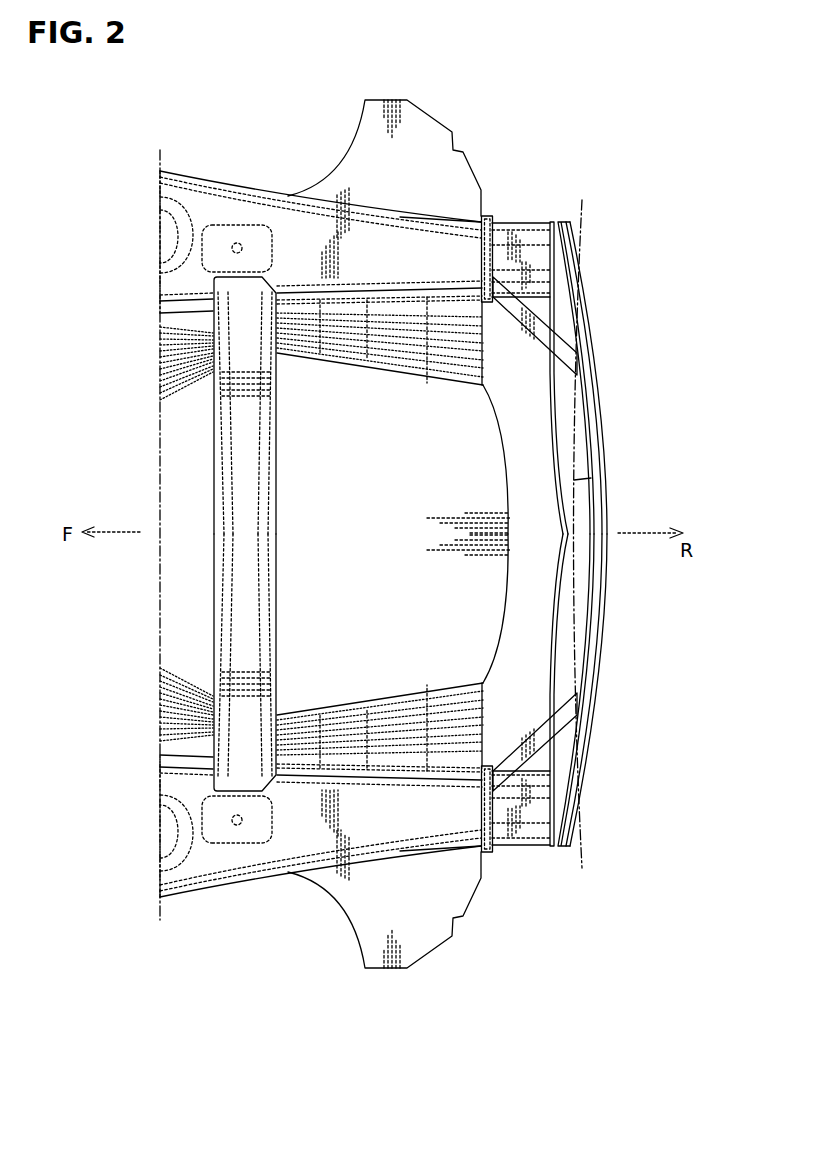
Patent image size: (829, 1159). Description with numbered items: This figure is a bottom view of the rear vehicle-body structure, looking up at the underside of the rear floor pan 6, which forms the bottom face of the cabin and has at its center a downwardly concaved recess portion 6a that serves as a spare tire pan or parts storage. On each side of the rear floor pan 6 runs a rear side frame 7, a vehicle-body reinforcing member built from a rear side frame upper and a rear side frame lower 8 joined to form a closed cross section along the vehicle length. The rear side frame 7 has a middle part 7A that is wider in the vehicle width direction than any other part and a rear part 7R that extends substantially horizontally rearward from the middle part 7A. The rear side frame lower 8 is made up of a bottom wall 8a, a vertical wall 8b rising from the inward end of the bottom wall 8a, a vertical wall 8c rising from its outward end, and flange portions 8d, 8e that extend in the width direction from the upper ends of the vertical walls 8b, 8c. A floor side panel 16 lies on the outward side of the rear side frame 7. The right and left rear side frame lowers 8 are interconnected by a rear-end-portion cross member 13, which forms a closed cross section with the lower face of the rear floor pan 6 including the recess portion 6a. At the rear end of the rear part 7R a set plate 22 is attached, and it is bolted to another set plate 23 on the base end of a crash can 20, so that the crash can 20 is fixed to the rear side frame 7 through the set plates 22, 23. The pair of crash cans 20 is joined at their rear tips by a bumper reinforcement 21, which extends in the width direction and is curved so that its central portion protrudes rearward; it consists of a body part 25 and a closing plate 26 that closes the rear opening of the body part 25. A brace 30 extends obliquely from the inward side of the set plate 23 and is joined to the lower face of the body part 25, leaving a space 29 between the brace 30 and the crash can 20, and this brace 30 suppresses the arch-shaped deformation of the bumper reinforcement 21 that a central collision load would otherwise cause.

The rear floor pan 6 is at (455, 318).
The recess portion 6a is at (357, 511).
The rear side frame 7 is at (209, 178).
The middle part 7A is at (172, 172).
The rear part 7R is at (406, 207).
The rear side frame lower 8 is at (391, 300).
The bottom wall 8a is at (320, 298).
The vertical wall 8b is at (367, 300).
The vertical wall 8c is at (297, 213).
The flange portion 8d is at (427, 297).
The flange portion 8e is at (340, 208).
The rear-end-portion cross member 13 is at (273, 457).
The floor side panel 16 is at (430, 118).
The crash can 20 is at (522, 228).
The bumper reinforcement 21 is at (609, 430).
The set plate 22 is at (480, 258).
The set plate 23 is at (498, 216).
The body part 25 is at (560, 562).
The closing plate 26 is at (604, 573).
The space 29 is at (540, 303).
The brace 30 is at (525, 326).